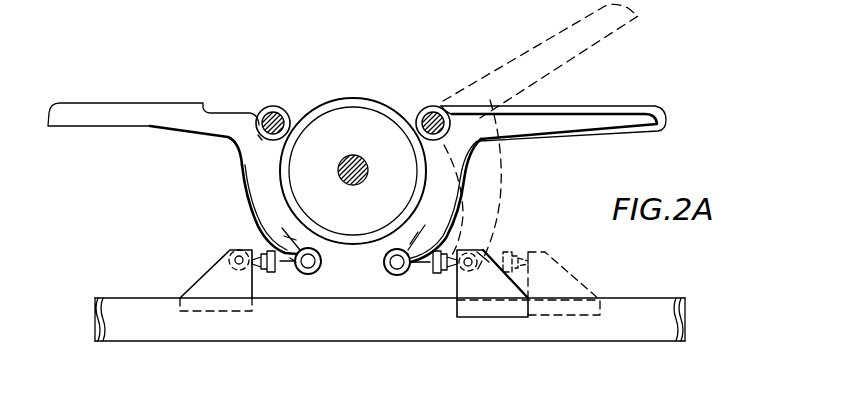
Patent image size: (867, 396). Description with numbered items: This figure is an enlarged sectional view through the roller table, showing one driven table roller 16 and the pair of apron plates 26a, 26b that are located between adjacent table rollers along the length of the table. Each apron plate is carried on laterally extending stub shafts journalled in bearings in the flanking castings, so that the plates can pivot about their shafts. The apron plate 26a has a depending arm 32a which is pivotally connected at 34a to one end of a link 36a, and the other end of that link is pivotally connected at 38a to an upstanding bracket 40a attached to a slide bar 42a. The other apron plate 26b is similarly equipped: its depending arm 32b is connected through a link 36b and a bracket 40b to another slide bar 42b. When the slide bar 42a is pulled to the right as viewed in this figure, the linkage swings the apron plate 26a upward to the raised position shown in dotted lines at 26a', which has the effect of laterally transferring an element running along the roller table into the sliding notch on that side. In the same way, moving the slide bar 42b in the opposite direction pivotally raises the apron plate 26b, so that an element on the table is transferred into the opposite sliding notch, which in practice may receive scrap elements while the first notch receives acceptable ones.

The table roller 16 is at (354, 99).
The apron plate 26a is at (553, 107).
The raised position of apron plate 26a' is at (559, 61).
The apron plate 26b is at (163, 111).
The depending arm 32a is at (455, 190).
The depending arm 32b is at (248, 184).
The pivotal connection 34a is at (393, 276).
The link 36a is at (442, 274).
The link 36b is at (262, 274).
The pivotal connection 38a is at (484, 254).
The upstanding bracket 40a is at (507, 307).
The bracket 40b is at (204, 284).
The slide bar 42a is at (643, 311).
The slide bar 42b is at (93, 300).